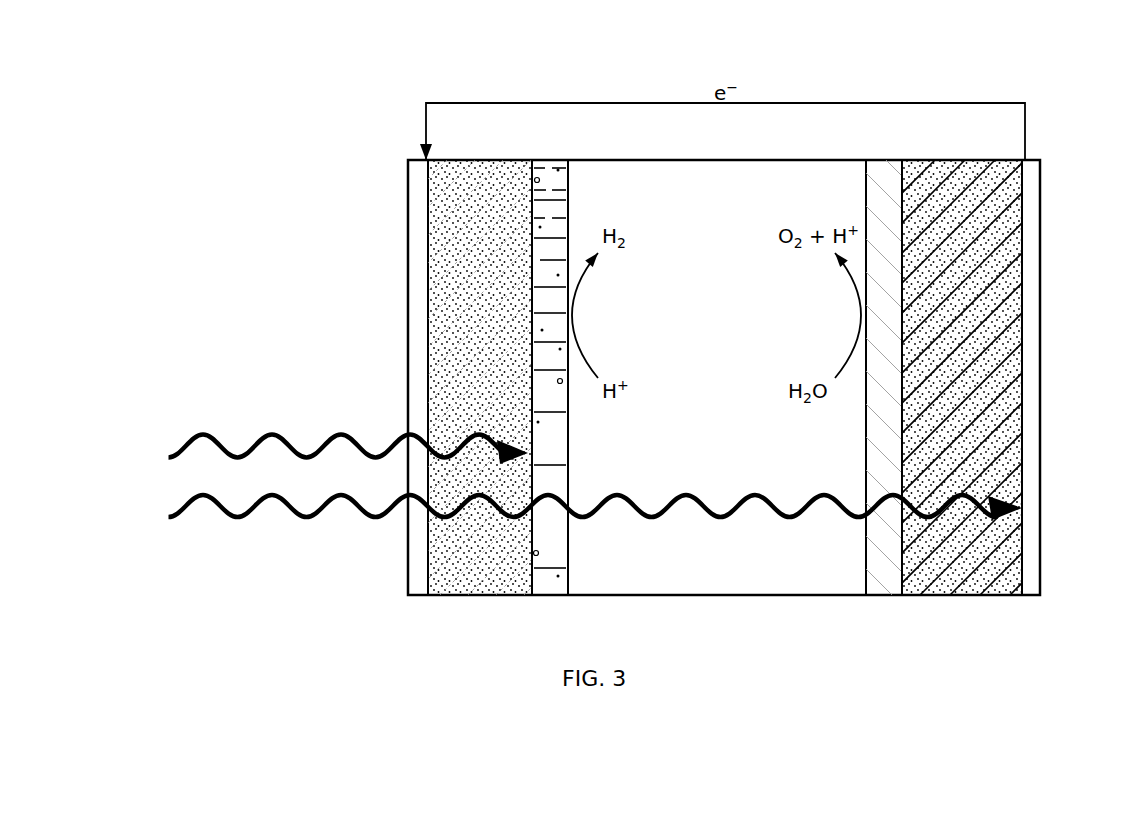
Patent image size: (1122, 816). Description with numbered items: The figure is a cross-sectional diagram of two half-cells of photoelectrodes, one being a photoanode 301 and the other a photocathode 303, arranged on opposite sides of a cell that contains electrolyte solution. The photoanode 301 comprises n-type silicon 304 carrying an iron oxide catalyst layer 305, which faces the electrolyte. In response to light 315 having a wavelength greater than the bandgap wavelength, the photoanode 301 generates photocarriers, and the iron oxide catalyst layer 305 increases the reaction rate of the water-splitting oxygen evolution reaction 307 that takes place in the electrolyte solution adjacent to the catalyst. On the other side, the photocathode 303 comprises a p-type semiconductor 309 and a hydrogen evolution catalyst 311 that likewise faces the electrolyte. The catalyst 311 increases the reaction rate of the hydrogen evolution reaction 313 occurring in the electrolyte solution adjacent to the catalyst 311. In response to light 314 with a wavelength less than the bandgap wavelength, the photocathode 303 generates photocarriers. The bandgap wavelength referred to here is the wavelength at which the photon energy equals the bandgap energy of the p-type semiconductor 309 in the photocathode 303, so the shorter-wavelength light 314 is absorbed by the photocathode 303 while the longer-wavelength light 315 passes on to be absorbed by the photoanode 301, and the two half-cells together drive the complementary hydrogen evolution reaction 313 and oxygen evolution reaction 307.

The photoanode 301 is at (965, 146).
The photocathode 303 is at (457, 146).
The n-type silicon 304 is at (1013, 190).
The iron oxide catalyst layer 305 is at (887, 182).
The water-splitting (oxygen evolution) reaction 307 is at (845, 317).
The p-type semiconductor 309 is at (440, 192).
The hydrogen evolution catalyst 311 is at (550, 178).
The hydrogen evolution reaction 313 is at (590, 317).
The light 314 is at (268, 433).
The light 315 is at (240, 516).